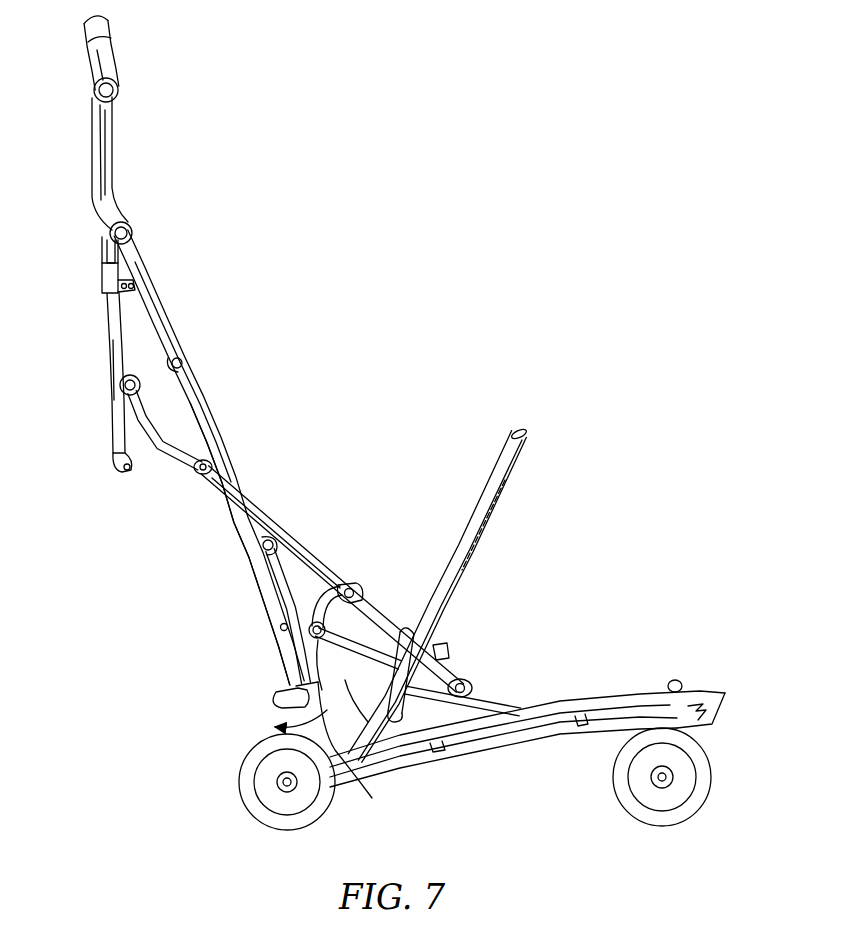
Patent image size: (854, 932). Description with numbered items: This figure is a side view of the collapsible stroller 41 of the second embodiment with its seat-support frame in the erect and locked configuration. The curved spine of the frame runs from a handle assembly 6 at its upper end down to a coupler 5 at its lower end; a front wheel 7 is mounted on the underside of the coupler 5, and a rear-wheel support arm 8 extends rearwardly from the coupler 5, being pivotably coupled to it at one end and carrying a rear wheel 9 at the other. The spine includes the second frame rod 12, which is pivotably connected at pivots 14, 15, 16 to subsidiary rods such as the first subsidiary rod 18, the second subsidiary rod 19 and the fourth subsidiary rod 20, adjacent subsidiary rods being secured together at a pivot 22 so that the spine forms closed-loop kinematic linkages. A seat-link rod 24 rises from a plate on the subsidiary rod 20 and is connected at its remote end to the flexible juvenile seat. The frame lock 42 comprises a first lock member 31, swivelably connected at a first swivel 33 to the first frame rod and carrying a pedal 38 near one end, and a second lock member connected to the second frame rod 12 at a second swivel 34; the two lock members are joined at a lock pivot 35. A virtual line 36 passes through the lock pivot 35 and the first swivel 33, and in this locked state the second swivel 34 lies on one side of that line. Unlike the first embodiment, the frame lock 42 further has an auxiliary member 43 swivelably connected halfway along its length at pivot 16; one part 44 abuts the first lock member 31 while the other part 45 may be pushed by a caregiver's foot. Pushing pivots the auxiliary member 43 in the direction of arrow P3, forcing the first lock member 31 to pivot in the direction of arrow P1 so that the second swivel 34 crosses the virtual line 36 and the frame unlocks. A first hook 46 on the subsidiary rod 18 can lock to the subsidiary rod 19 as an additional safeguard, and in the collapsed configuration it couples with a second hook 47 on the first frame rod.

The coupler 5 is at (712, 692).
The handle assembly 6 is at (112, 40).
The front wheel 7 is at (705, 785).
The rear-wheel support arm 8 is at (540, 740).
The rear wheel 9 is at (245, 812).
The second frame rod 12 is at (215, 405).
The pivot 14 is at (125, 382).
The pivot 15 is at (185, 362).
The pivot 16 is at (322, 636).
The first subsidiary rod 18 is at (97, 138).
The second subsidiary rod 19 is at (172, 313).
The fourth subsidiary rod 20 is at (368, 672).
The pivot 22 is at (128, 225).
The seat-link rod 24 is at (487, 510).
The first lock member 31 is at (281, 612).
The first swivel 33 is at (275, 540).
The second swivel 34 is at (283, 626).
The lock pivot 35 is at (303, 682).
The virtual line 36 is at (248, 485).
The pedal 38 is at (272, 712).
The collapsible stroller 41 is at (287, 397).
The frame lock 42 is at (233, 635).
The auxiliary member 43 is at (338, 622).
The part of auxiliary member 44 is at (318, 655).
The part of auxiliary member 45 is at (322, 622).
The first hook 46 is at (135, 282).
The second hook 47 is at (200, 458).
The arrow P1 is at (372, 798).
The arrow P3 is at (340, 548).